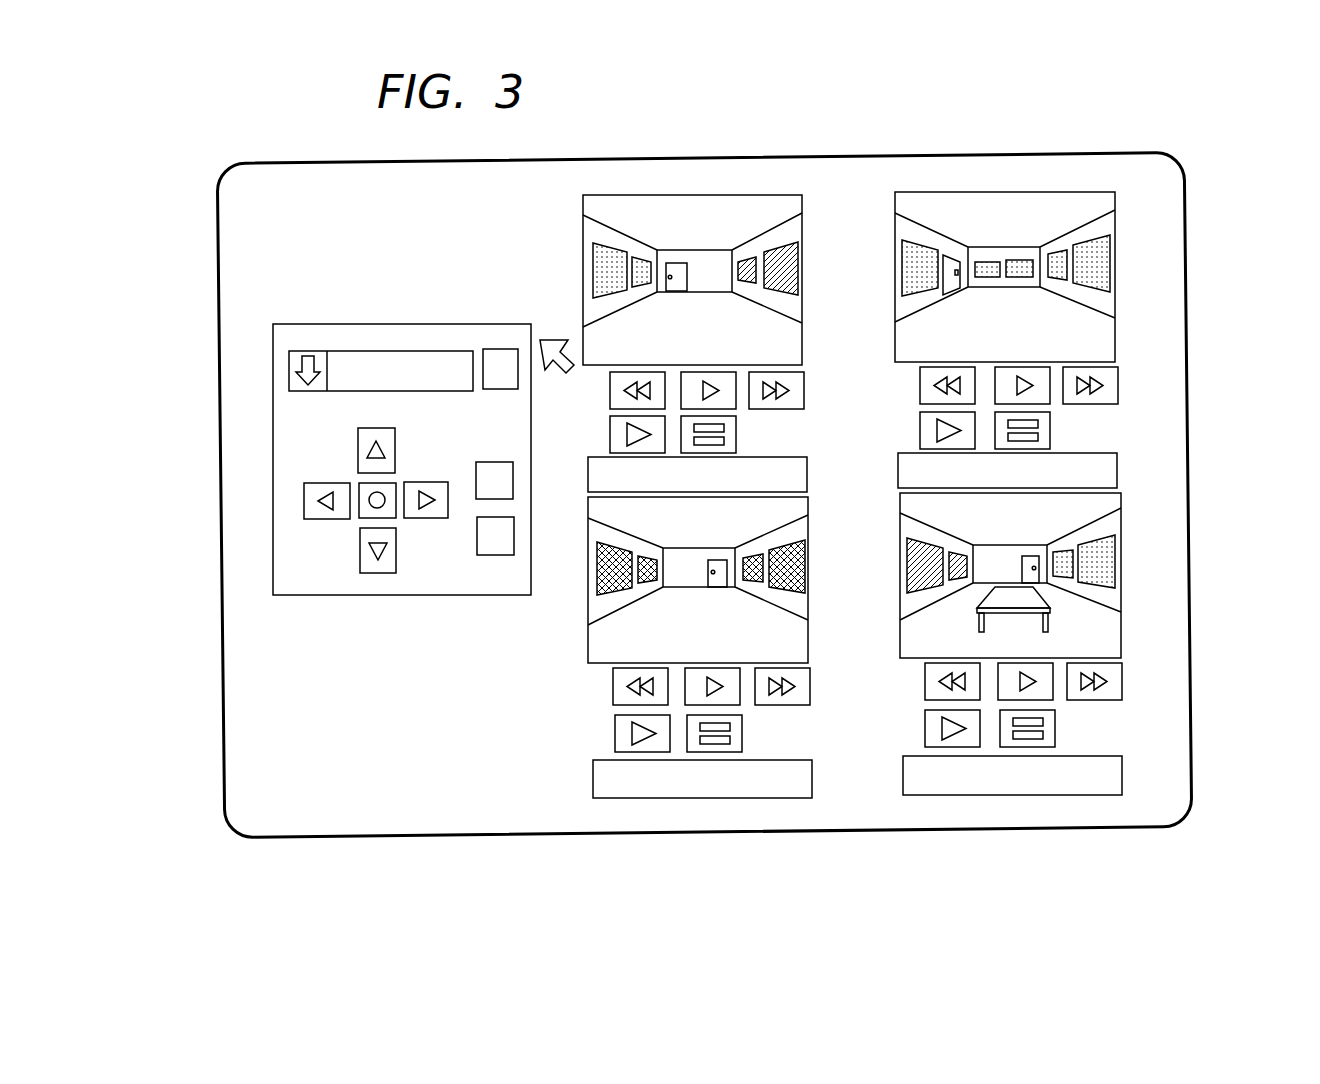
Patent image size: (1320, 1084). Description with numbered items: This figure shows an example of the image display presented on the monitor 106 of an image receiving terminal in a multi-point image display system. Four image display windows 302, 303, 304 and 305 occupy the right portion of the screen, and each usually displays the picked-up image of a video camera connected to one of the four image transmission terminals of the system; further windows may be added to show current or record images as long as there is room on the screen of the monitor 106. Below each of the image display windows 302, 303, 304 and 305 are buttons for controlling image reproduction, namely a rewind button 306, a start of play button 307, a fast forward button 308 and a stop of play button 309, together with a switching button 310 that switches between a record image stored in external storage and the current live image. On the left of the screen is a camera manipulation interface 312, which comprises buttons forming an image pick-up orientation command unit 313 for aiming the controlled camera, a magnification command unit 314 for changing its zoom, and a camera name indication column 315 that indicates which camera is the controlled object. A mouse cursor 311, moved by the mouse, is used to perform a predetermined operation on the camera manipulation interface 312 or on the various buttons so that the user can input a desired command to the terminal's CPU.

The monitor 106 is at (730, 830).
The image display window 302 is at (650, 196).
The image display window 303 is at (1051, 291).
The image display window 304 is at (590, 650).
The image display window 305 is at (1122, 588).
The rewind button 306 is at (920, 388).
The start of play button 307 is at (1050, 408).
The fast forward button 308 is at (1118, 382).
The stop of play button 309 is at (1050, 430).
The switching button 310 is at (920, 437).
The mouse cursor 311 is at (550, 330).
The camera manipulation interface 312 is at (344, 493).
The image pick-up orientation command unit 313 is at (304, 500).
The magnification command unit 314 is at (478, 499).
The camera name indication column 315 is at (405, 351).